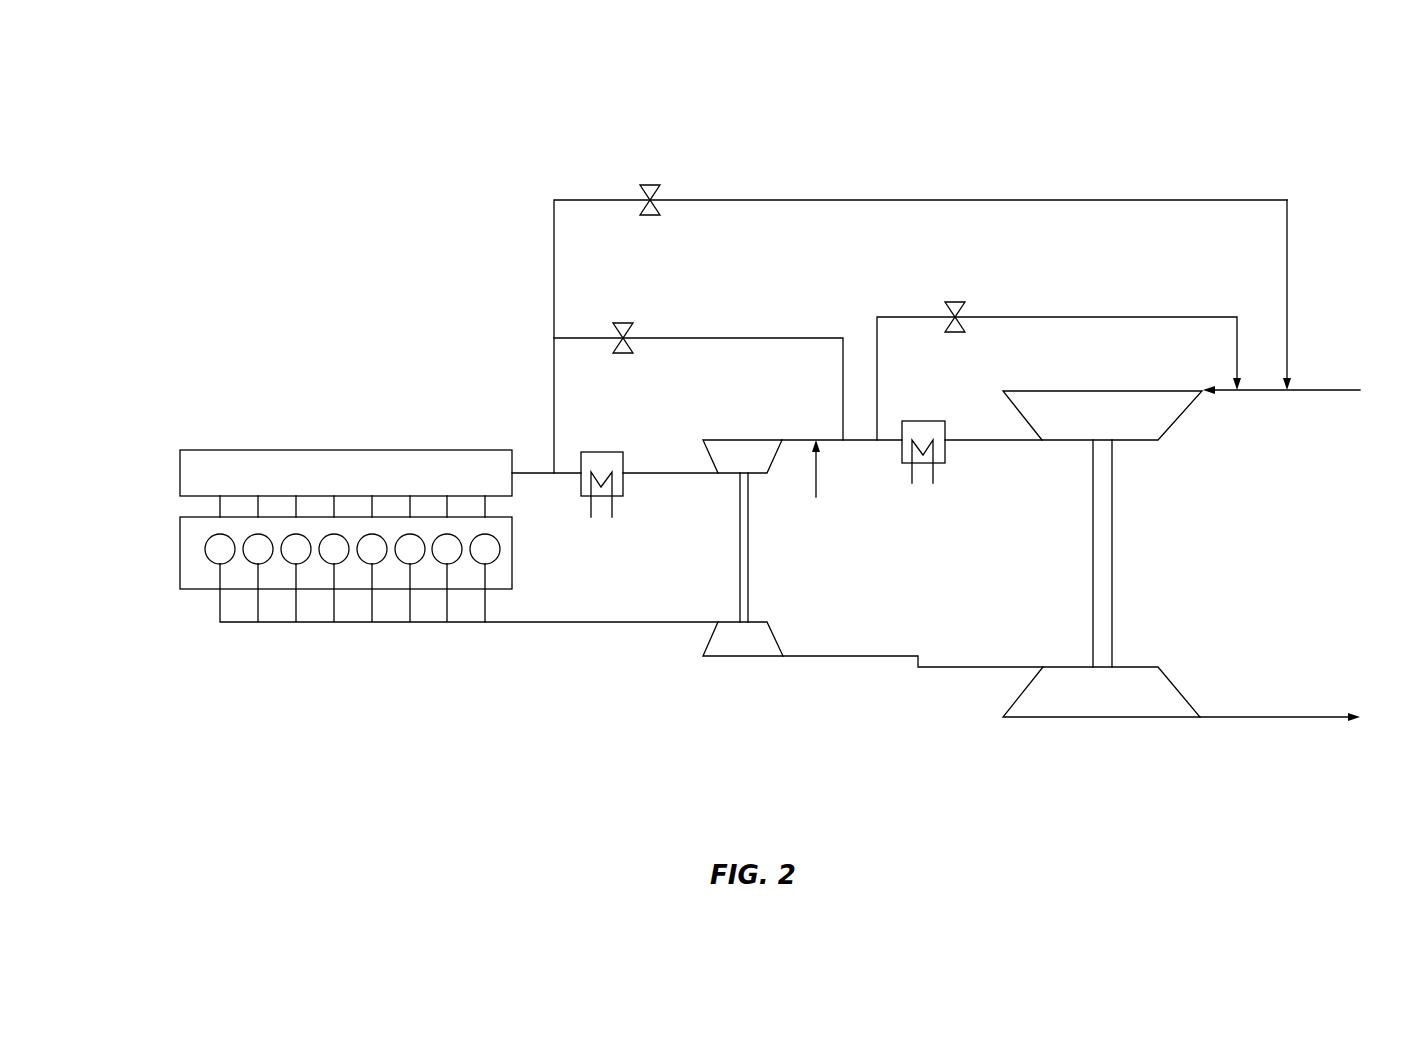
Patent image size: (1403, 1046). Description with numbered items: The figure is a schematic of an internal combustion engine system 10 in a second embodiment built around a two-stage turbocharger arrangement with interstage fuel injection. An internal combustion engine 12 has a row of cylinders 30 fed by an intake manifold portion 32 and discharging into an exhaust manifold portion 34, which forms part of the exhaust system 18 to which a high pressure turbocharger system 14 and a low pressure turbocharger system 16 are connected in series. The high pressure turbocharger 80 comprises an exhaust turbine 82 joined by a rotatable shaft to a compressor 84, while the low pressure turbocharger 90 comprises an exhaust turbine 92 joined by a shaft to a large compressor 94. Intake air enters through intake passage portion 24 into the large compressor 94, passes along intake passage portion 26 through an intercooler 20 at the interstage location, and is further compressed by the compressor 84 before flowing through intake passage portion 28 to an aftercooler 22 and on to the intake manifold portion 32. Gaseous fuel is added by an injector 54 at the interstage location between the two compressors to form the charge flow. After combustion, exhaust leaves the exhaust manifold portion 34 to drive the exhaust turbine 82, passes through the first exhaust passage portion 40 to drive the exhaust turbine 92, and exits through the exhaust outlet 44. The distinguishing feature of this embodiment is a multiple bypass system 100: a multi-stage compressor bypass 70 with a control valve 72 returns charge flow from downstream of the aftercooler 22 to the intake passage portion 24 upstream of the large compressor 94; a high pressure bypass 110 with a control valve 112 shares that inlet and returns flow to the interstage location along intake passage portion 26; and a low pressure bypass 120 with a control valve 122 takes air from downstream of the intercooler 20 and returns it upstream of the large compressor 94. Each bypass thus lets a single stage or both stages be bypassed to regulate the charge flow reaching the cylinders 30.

The internal combustion engine system 10 is at (1065, 82).
The internal combustion engine 12 is at (311, 493).
The high pressure turbocharger system 14 is at (746, 566).
The low pressure turbocharger system 16 is at (1124, 609).
The exhaust system 18 is at (532, 636).
The intercooler 20 is at (920, 421).
The aftercooler 22 is at (600, 452).
The intake passage portion 24 is at (1322, 390).
The intake passage portion 26 is at (988, 440).
The intake passage portion 28 is at (676, 473).
The cylinders 30 is at (222, 535).
The intake manifold portion 32 is at (180, 473).
The exhaust manifold portion 34 is at (355, 623).
The first exhaust passage portion 40 is at (873, 658).
The exhaust outlet 44 is at (1255, 718).
The injector 54 is at (816, 486).
The multi-stage compressor bypass 70 is at (1068, 190).
The control valve 72 is at (655, 183).
The high pressure turbocharger 80 is at (728, 572).
The exhaust turbine 82 is at (778, 640).
The compressor 84 is at (743, 440).
The low pressure turbocharger 90 is at (1073, 585).
The exhaust turbine 92 is at (1180, 695).
The large compressor 94 is at (1185, 420).
The multiple bypass system 100 is at (1298, 180).
The high pressure bypass 110 is at (750, 325).
The control valve 112 is at (622, 325).
The low pressure bypass 120 is at (1118, 305).
The control valve 122 is at (955, 302).